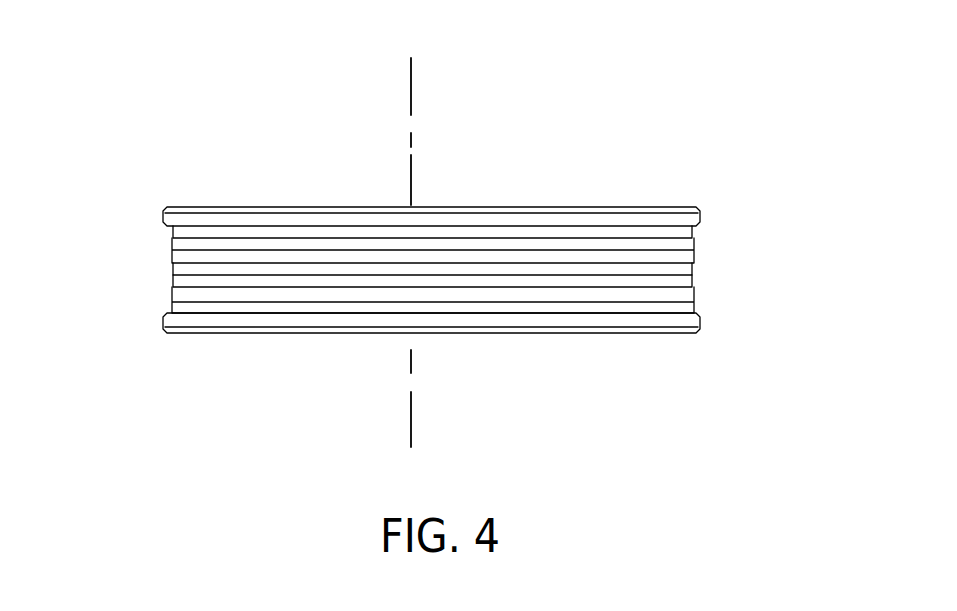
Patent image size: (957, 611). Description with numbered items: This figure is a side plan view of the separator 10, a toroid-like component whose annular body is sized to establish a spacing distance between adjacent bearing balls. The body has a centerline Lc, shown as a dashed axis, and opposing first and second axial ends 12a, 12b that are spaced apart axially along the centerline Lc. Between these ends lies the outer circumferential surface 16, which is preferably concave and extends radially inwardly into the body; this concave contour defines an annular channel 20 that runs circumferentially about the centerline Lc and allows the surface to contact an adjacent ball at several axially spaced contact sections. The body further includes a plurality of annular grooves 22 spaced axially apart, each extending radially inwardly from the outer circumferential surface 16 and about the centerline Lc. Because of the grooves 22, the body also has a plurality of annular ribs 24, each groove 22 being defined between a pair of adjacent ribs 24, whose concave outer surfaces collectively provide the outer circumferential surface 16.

The separator 10 is at (194, 102).
The centerline Lc is at (411, 72).
The first axial end 12a is at (660, 338).
The second axial end 12b is at (650, 206).
The outer circumferential surface 16 is at (693, 270).
The annular channel 20 is at (702, 283).
The annular groove 22 is at (173, 232).
The annular rib 24 is at (172, 245).